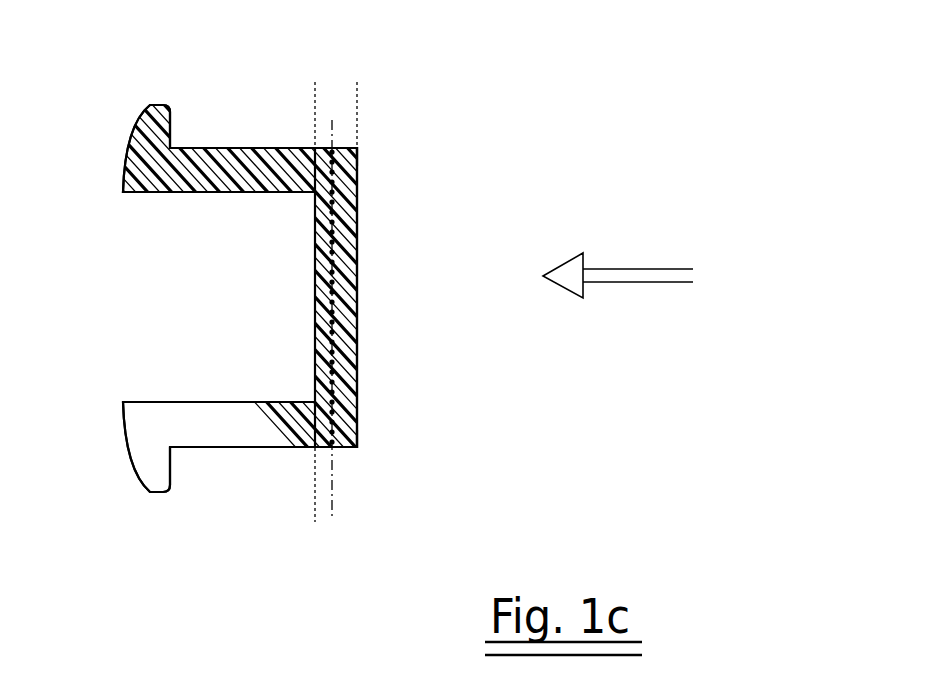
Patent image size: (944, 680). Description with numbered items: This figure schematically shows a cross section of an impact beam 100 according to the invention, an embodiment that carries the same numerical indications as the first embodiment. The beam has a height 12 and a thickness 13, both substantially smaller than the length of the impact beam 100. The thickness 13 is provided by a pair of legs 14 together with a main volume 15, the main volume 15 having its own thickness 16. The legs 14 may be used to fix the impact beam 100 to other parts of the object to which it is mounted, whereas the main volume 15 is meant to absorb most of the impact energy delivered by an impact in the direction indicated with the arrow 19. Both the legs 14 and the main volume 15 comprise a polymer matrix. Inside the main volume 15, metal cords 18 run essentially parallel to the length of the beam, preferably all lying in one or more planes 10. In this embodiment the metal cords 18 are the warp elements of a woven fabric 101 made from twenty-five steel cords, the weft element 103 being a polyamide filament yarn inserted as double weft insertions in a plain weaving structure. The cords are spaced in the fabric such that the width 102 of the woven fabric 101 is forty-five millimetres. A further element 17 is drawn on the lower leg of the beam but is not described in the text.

The profile beam 100 is at (690, 156).
The web thickness dimension 10 is at (345, 525).
The overall height dimension 12 is at (165, 492).
The upper flange / flange width 13 is at (260, 156).
The flange lip bulb 14 is at (180, 425).
The web 15 is at (323, 300).
The web thickness 16 is at (360, 75).
The lower flange 17 is at (252, 422).
The centerline perforations 18 is at (327, 228).
The load direction arrow 19 is at (653, 279).
The upper web-flange junction 101 is at (352, 152).
The web height dimension 102 is at (330, 166).
The lower web-flange junction 103 is at (357, 447).